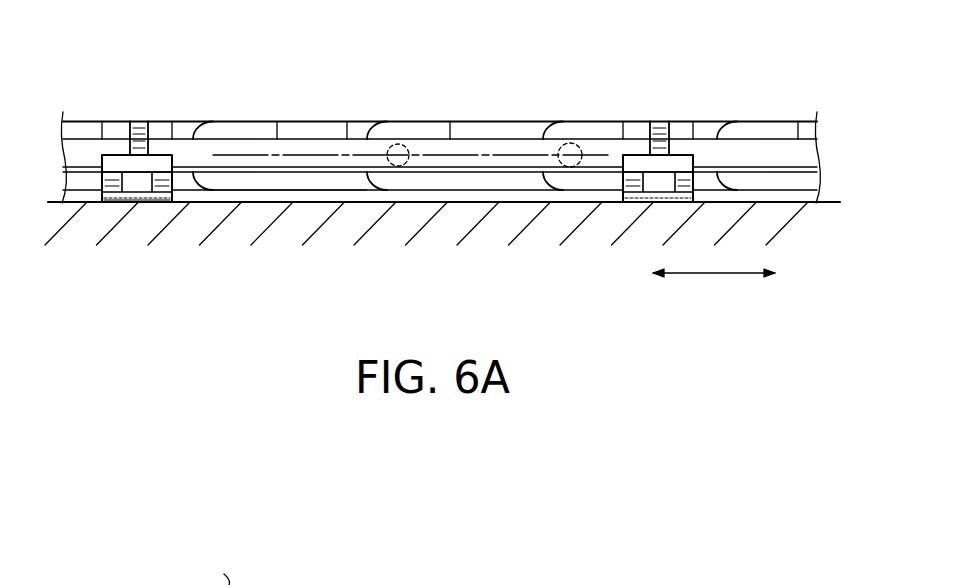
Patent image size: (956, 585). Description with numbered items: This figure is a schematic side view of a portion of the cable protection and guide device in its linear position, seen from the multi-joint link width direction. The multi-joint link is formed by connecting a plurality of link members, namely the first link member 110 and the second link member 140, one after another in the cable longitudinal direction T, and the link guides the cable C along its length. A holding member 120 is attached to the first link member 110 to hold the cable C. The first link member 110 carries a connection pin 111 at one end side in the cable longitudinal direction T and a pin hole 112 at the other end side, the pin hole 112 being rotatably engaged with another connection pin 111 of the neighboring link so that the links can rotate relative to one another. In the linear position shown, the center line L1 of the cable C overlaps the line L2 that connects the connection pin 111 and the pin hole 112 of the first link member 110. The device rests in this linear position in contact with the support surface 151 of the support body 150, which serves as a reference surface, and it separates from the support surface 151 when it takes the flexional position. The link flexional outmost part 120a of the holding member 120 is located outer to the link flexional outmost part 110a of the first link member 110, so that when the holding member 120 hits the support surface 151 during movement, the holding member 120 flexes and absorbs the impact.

The first link member 110 is at (83, 121).
The link flexional outmost part of the first link member 110a is at (195, 202).
The holding member 120 is at (138, 120).
The link flexional outmost part of the holding member 120a is at (118, 202).
The second link member 140 is at (257, 121).
The support body 150 is at (317, 238).
The support surface 151 is at (368, 200).
The connection pin 111 is at (405, 165).
The pin hole 112 is at (567, 167).
The center line of the cable L1 is at (313, 155).
The line connecting the connection pin and the pin hole L2 is at (503, 155).
The cable C is at (352, 140).
The cable longitudinal direction T is at (714, 285).